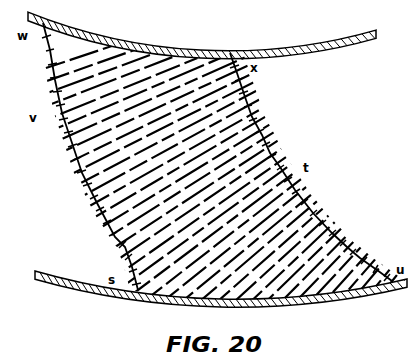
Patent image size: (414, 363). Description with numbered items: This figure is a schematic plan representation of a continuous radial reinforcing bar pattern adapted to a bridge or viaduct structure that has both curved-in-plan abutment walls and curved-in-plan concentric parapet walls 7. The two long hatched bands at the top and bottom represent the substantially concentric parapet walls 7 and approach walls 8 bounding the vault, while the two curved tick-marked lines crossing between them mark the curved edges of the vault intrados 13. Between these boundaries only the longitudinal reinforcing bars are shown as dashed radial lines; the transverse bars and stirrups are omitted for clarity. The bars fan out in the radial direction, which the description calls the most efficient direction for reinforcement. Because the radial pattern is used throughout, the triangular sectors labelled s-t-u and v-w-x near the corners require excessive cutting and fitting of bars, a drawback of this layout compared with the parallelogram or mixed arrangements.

The parapet wall 7 is at (129, 42).
The approach wall 8 is at (324, 43).
The intrados 13 is at (95, 207).